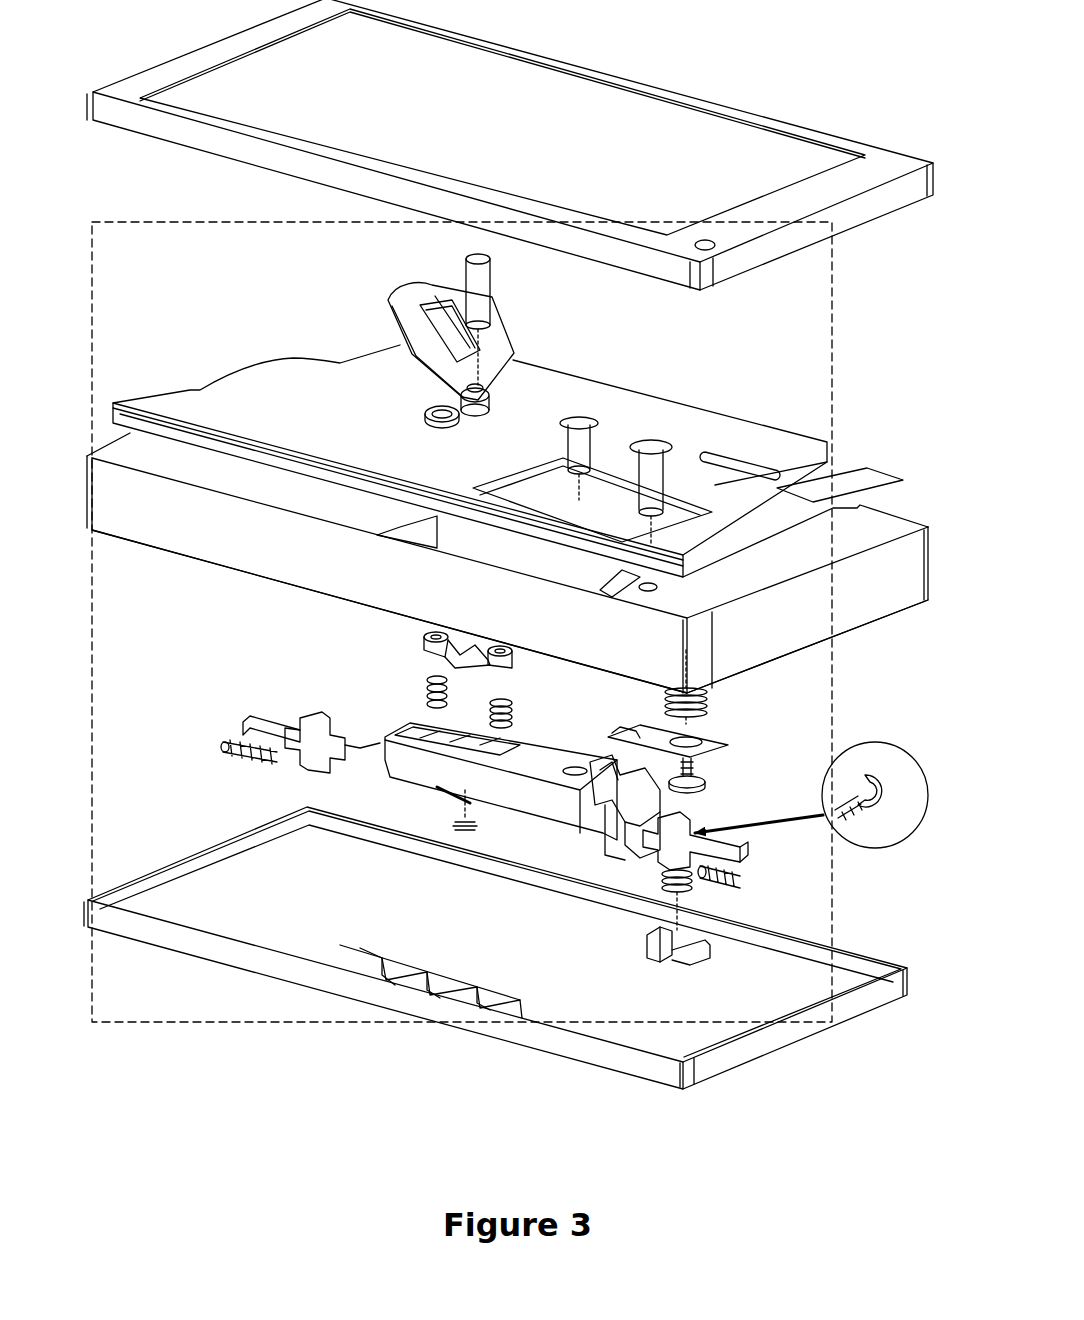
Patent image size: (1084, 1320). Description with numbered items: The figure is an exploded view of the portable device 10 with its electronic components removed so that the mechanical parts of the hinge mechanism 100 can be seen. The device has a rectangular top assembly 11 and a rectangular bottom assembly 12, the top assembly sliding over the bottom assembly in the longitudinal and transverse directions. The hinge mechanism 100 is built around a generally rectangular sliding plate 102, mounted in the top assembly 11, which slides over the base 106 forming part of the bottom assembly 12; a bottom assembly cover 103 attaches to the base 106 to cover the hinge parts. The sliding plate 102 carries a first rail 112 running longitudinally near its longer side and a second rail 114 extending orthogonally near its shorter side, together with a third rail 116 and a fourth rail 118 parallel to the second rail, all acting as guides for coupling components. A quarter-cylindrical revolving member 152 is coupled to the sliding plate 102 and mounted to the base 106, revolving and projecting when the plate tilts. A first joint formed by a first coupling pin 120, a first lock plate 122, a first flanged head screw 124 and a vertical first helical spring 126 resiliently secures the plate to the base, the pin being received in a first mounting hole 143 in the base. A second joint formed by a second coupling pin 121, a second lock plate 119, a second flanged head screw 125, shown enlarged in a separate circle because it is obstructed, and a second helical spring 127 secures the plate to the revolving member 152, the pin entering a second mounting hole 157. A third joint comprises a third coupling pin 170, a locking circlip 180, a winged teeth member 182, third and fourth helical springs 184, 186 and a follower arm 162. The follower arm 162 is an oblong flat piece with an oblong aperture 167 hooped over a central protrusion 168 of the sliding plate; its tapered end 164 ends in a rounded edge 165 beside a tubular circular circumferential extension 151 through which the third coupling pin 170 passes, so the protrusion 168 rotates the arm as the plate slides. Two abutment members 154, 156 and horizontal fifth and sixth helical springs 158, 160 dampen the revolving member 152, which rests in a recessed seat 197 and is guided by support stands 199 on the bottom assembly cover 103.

The portable device 10 is at (175, 1117).
The top assembly 11 is at (795, 128).
The bottom assembly 12 is at (148, 548).
The hinge mechanism 100 is at (117, 219).
The sliding plate 102 is at (123, 403).
The bottom assembly cover 103 is at (850, 1012).
The base 106 is at (853, 632).
The first rail 112 is at (248, 428).
The second rail 114 is at (783, 485).
The third rail 116 is at (700, 474).
The fourth rail 118 is at (537, 477).
The second lock plate 119 is at (703, 958).
The first coupling pin 120 is at (622, 448).
The second coupling pin 121 is at (598, 420).
The first lock plate 122 is at (728, 738).
The first flanged head screw 124 is at (705, 781).
The second flanged head screw 125 is at (697, 836).
The first helical spring 126 is at (708, 701).
The second helical spring 127 is at (690, 884).
The first mounting hole 143 is at (658, 588).
The circular circumferential extension 151 is at (488, 413).
The revolving member 152 is at (393, 776).
The abutment member 154 is at (297, 760).
The abutment member 156 is at (735, 841).
The second mounting hole 157 is at (565, 776).
The fifth helical spring 158 is at (243, 753).
The sixth helical spring 160 is at (738, 881).
The follower arm 162 is at (414, 372).
The tapered end 164 is at (465, 378).
The rounded edge 165 is at (490, 397).
The aperture 167 is at (424, 328).
The protrusion 168 is at (425, 417).
The third coupling pin 170 is at (466, 257).
The locking circlip 180 is at (476, 829).
The winged teeth member 182 is at (428, 648).
The third helical spring 184 is at (427, 692).
The fourth helical spring 186 is at (512, 710).
The recessed seat 197 is at (420, 975).
The support stands 199 is at (384, 964).